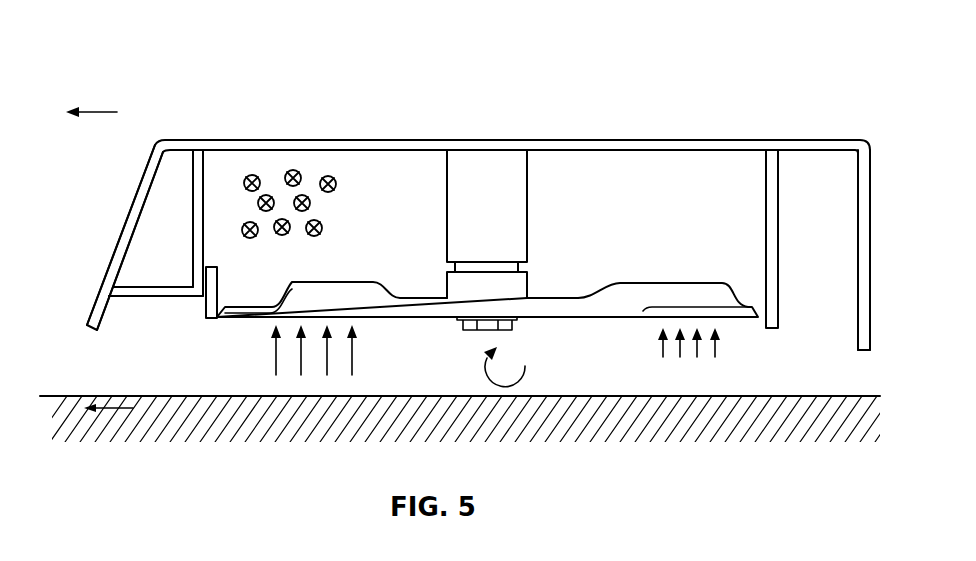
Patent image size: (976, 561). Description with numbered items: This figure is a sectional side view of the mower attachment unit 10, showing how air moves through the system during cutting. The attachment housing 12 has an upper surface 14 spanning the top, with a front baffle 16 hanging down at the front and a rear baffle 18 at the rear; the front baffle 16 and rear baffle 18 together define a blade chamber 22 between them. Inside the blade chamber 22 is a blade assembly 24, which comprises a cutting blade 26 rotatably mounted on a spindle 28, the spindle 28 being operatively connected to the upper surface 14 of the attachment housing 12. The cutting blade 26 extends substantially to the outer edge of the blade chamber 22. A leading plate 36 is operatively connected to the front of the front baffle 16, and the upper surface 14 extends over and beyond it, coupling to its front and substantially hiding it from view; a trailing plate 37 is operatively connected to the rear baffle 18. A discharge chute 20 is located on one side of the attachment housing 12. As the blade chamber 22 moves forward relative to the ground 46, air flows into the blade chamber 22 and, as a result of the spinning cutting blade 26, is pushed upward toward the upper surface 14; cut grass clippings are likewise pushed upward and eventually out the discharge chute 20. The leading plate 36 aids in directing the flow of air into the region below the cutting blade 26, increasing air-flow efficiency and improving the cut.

The mower attachment unit 10 is at (150, 79).
The attachment housing 12 is at (200, 140).
The upper surface 14 is at (160, 140).
The front baffle 16 is at (197, 173).
The rear baffle 18 is at (778, 165).
The discharge chute 20 is at (224, 309).
The blade chamber 22 is at (597, 160).
The blade assembly 24 is at (447, 267).
The cutting blade 26 is at (678, 292).
The spindle 28 is at (503, 160).
The leading plate 36 is at (143, 288).
The trailing plate 37 is at (862, 215).
The ground 46 is at (62, 394).